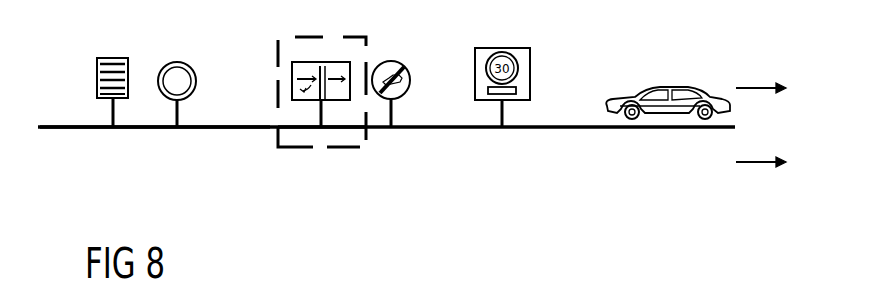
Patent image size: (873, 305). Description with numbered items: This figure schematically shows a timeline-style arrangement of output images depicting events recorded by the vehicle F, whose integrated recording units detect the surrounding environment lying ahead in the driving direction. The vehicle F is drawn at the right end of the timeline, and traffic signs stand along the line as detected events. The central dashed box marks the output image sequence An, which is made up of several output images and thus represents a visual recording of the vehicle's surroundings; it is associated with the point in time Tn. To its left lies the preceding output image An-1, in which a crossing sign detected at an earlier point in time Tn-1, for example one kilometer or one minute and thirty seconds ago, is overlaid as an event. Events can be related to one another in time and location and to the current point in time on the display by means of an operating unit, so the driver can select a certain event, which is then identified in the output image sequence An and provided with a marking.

The vehicle F is at (660, 80).
The output image sequence An is at (322, 75).
The preceding output image An-1 is at (111, 78).
The point in time Tn is at (322, 157).
The timeline section n-1 Tn-1 is at (147, 157).